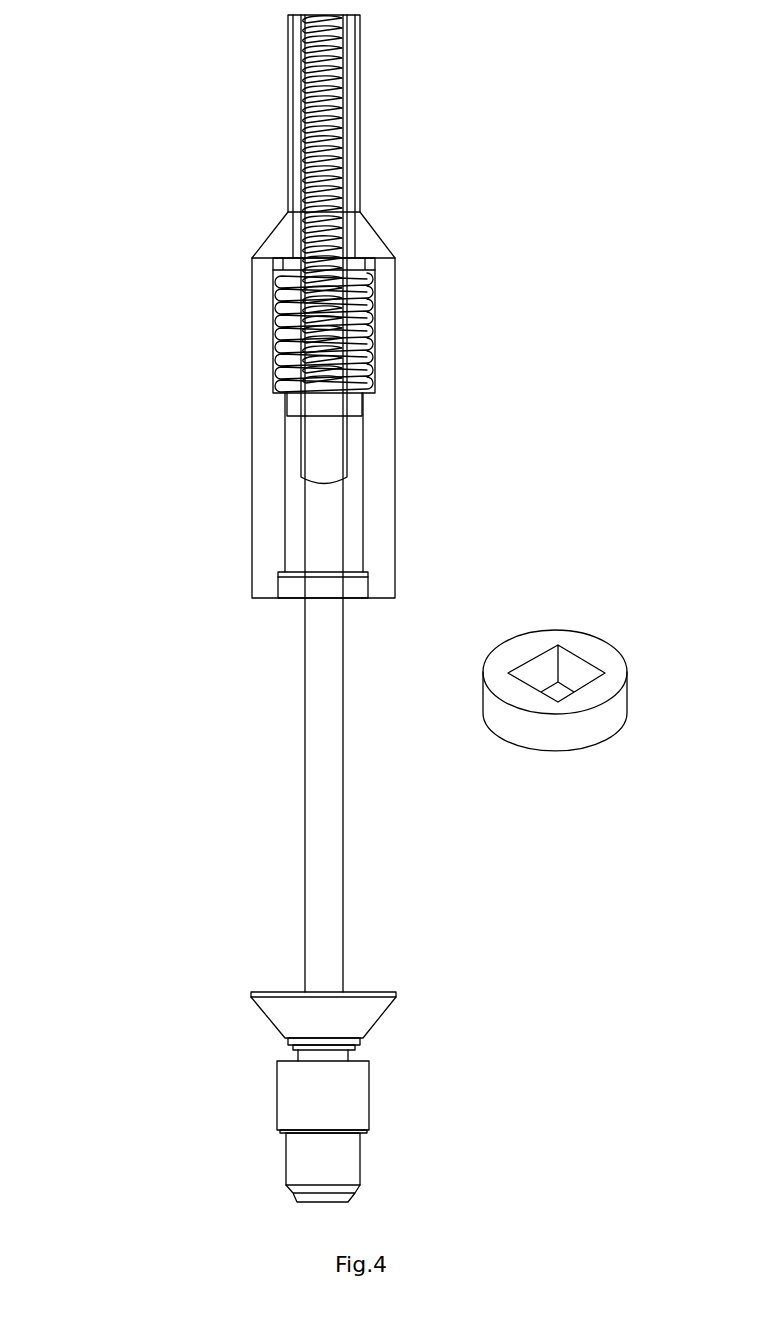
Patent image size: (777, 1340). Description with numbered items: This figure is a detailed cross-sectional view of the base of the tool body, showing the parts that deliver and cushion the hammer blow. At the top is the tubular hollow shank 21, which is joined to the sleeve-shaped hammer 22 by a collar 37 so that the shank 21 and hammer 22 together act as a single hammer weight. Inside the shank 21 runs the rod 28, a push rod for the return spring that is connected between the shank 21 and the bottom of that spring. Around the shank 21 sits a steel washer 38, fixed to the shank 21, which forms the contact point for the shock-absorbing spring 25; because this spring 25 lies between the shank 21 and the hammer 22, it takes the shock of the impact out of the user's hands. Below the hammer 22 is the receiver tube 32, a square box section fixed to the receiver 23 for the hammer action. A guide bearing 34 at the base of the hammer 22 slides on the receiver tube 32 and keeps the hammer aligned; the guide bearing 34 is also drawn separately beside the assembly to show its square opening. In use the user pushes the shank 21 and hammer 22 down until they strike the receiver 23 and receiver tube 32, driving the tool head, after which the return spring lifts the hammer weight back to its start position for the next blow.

The hollow shank 21 is at (288, 53).
The rod 28 is at (308, 105).
The receiver tube 32 is at (300, 155).
The collar 37 is at (383, 236).
The washer 38 is at (370, 270).
The shock-absorbing spring 25 is at (277, 325).
The sleeve-shaped hammer 22 is at (252, 490).
The guide bearing 34 is at (295, 600).
The receiver 23 is at (267, 1018).